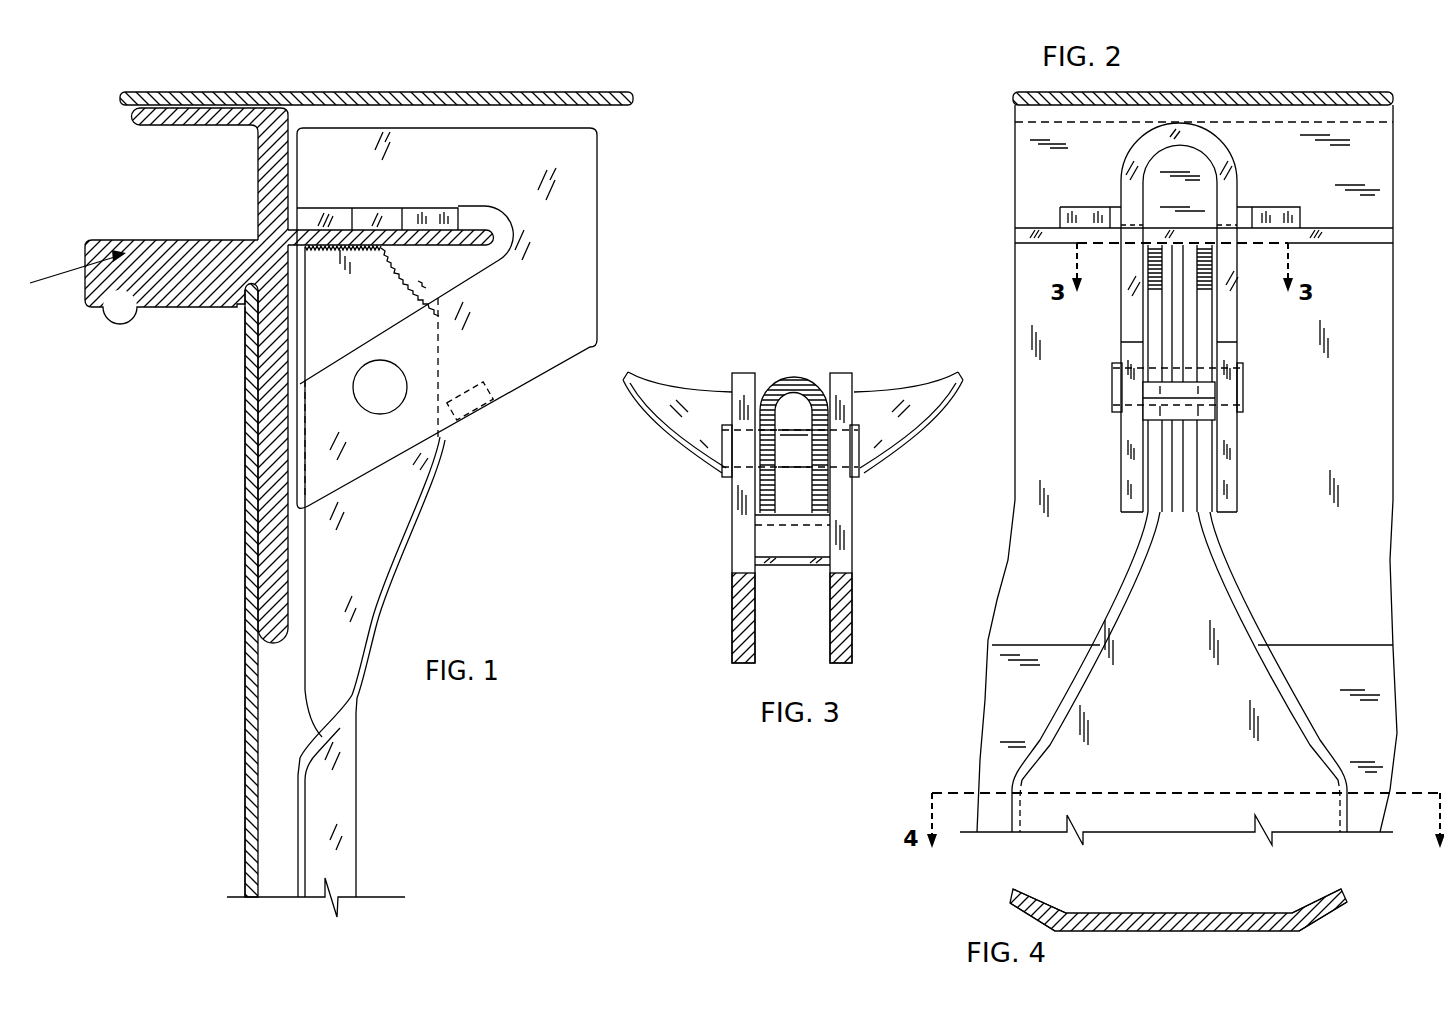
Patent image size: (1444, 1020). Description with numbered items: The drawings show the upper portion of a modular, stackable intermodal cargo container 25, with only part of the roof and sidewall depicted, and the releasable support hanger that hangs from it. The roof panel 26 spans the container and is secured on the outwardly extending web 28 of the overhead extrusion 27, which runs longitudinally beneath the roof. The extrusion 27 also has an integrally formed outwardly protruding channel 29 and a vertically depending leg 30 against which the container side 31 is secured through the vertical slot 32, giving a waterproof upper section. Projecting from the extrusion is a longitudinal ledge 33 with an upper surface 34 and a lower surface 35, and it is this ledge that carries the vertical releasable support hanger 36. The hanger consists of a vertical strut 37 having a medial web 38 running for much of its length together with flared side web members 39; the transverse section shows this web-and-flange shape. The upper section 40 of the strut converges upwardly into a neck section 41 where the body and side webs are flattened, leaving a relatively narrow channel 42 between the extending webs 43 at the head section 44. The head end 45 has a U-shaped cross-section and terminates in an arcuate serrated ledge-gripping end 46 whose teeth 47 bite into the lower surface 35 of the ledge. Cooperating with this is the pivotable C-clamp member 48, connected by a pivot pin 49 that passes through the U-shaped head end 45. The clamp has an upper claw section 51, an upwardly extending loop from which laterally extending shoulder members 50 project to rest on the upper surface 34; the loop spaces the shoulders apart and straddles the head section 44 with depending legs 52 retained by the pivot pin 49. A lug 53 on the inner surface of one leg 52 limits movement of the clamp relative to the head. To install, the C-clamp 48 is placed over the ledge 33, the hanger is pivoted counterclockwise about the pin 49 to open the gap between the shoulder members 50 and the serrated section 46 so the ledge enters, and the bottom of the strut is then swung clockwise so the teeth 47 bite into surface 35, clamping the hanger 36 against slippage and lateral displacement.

In FIG. 1, the intermodal cargo container 25 is at (414, 86).
In FIG. 1, the roof panel 26 is at (584, 92).
In FIG. 2, the roof panel 26 is at (1228, 92).
In FIG. 1, the overhead extrusion 27 is at (250, 206).
In FIG. 1, the outwardly extending web 28 is at (208, 128).
In FIG. 1, the outwardly protruding channel 29 is at (148, 307).
In FIG. 1, the vertically depending leg 30 is at (271, 650).
In FIG. 1, the container side 31 is at (244, 488).
In FIG. 1, the vertical slot 32 is at (245, 296).
In FIG. 1, the longitudinally protruding ledge 33 is at (497, 255).
In FIG. 1, the upper surface of ledge 34 is at (352, 218).
In FIG. 1, the lower surface of ledge 35 is at (428, 251).
In FIG. 1, the vertical releasable support hanger 36 is at (364, 745).
In FIG. 1, the vertical strut 37 is at (343, 855).
In FIG. 4, the medial web 38 is at (1142, 913).
In FIG. 4, the side web members 39 is at (1045, 906).
In FIG. 2, the upper section of strut 40 is at (1245, 682).
In FIG. 2, the neck section 41 is at (1180, 492).
In FIG. 2, the narrow channel 42 is at (1180, 318).
In FIG. 1, the extending webs 43 is at (373, 608).
In FIG. 1, the head section 44 is at (433, 481).
In FIG. 1, the head end 45 is at (327, 332).
In FIG. 3, the head end 45 is at (792, 378).
In FIG. 1, the arcuate serrated ledge-gripping end 46 is at (386, 266).
In FIG. 1, the teeth 47 is at (417, 288).
In FIG. 1, the C-clamp member 48 is at (597, 196).
In FIG. 1, the pivot pin 49 is at (369, 398).
In FIG. 3, the pivot pin 49 is at (798, 458).
In FIG. 2, the pivot pin 49 is at (1245, 392).
In FIG. 2, the shoulder members 50 is at (1080, 207).
In FIG. 2, the upper claw section 51 is at (1200, 139).
In FIG. 1, the legs of C-clamp 52 is at (497, 326).
In FIG. 2, the legs of C-clamp 52 is at (1130, 447).
In FIG. 1, the lug 53 is at (483, 411).